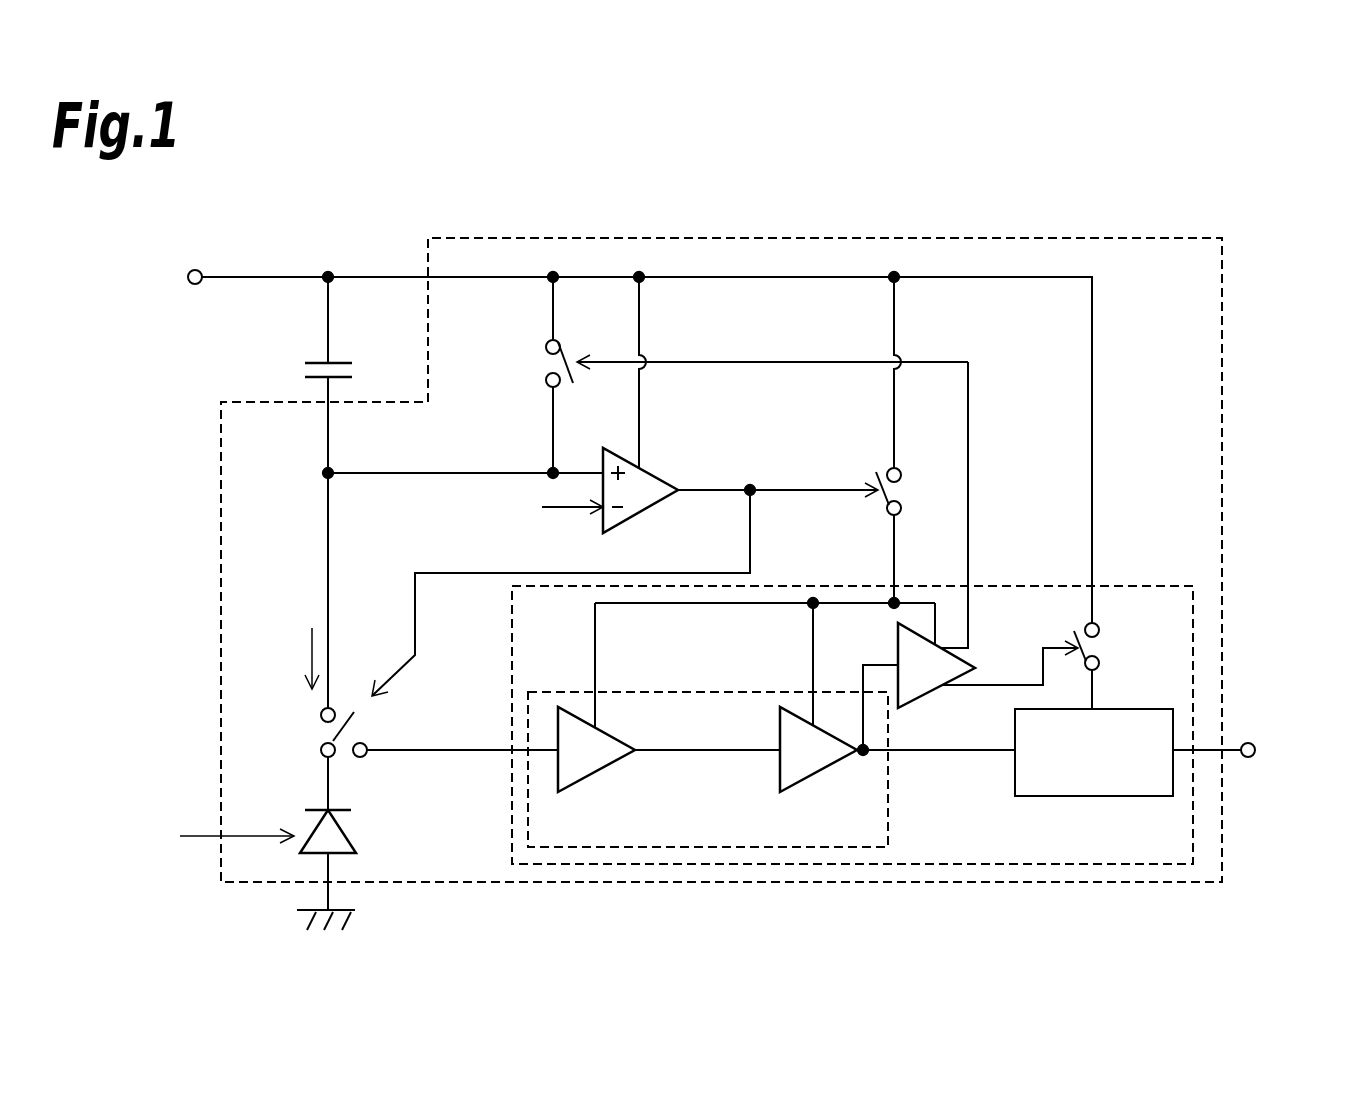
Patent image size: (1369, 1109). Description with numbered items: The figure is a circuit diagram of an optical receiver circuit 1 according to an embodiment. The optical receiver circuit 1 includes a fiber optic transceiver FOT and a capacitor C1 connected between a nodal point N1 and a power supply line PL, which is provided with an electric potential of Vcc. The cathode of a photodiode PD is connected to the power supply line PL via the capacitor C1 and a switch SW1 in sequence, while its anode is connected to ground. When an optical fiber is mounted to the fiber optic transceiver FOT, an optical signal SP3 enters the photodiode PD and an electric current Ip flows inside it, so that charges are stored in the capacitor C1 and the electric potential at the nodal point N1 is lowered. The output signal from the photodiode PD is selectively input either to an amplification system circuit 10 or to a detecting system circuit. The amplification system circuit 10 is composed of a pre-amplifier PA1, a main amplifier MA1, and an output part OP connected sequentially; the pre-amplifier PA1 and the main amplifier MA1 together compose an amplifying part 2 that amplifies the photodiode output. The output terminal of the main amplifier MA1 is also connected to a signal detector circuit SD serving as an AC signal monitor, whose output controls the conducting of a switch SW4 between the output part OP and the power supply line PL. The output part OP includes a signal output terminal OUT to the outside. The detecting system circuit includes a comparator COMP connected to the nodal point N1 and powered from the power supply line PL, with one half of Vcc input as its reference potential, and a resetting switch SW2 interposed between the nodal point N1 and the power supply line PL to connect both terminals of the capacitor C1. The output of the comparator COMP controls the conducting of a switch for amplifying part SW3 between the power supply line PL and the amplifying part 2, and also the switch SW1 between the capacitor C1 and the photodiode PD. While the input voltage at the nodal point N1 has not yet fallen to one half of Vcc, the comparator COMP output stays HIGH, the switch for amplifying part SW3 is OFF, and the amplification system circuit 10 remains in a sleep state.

The optical receiver circuit 1 is at (1180, 190).
The amplifying part 2 is at (889, 818).
The amplification system circuit 10 is at (1153, 587).
The fiber optic transceiver FOT is at (1222, 858).
The power supply line PL is at (1043, 280).
The power source electric potential Vcc is at (188, 277).
The capacitor C1 is at (318, 361).
The nodal point N1 is at (333, 468).
The switch SW1 is at (321, 728).
The resetting switch SW2 is at (548, 362).
The switch for amplifying part SW3 is at (884, 500).
The switch SW4 is at (1100, 651).
The comparator COMP is at (663, 477).
The electric current Ip is at (298, 658).
The optical signal SP3 is at (224, 823).
The photodiode PD is at (352, 826).
The pre-amplifier PA1 is at (600, 770).
The main amplifier MA1 is at (820, 770).
The signal detector circuit SD is at (923, 700).
The output part OP is at (1128, 796).
The signal output terminal OUT is at (1256, 750).